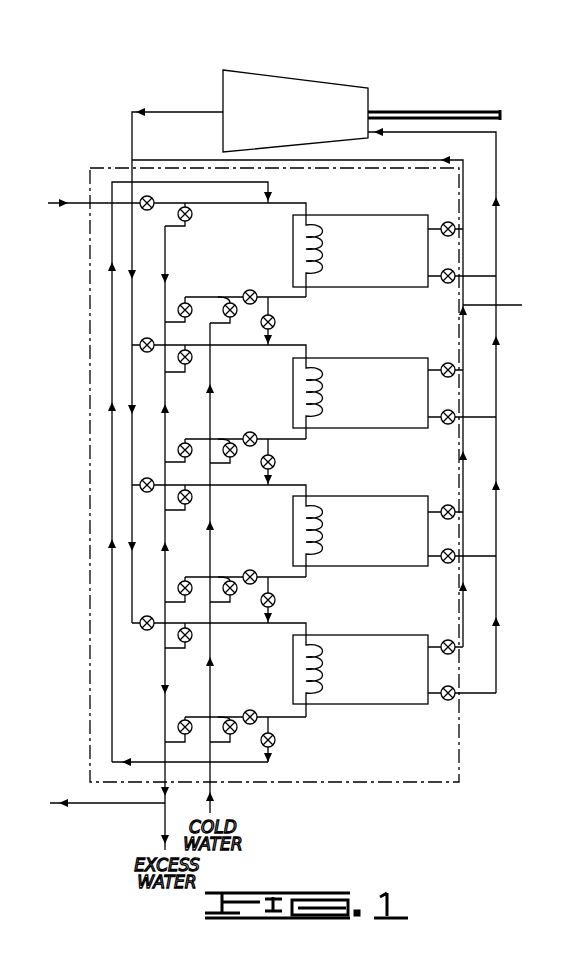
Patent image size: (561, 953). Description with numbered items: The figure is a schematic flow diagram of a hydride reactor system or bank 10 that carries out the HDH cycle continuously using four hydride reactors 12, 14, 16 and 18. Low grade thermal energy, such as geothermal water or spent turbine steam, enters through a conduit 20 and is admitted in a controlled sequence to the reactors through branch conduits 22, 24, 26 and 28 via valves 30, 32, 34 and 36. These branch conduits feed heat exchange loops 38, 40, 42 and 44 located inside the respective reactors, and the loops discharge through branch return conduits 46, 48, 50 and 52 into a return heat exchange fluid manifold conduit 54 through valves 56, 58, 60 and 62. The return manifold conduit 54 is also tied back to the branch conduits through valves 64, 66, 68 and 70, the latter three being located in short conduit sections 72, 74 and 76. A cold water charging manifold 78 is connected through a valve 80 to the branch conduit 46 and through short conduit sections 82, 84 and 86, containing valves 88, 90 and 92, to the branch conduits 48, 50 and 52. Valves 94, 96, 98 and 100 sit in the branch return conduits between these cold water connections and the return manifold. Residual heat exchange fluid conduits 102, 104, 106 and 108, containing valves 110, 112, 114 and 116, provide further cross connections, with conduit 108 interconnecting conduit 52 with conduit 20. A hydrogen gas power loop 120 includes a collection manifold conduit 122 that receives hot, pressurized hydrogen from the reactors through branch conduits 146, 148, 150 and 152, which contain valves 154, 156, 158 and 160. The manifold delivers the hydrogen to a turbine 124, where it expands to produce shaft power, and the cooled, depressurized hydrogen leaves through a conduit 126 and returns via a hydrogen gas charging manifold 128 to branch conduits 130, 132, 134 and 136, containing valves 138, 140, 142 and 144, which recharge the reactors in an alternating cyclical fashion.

The hydride reactor system 10 is at (357, 783).
The hydride reactor 12 is at (368, 214).
The hydride reactor 14 is at (366, 357).
The hydride reactor 16 is at (366, 495).
The hydride reactor 18 is at (366, 634).
The conduit 20 is at (78, 200).
The branch conduit 22 is at (136, 198).
The branch conduit 24 is at (146, 338).
The branch conduit 26 is at (146, 478).
The branch conduit 28 is at (146, 616).
The valve 30 is at (152, 198).
The valve 32 is at (148, 353).
The valve 34 is at (148, 493).
The valve 36 is at (148, 631).
The heat exchange loop 38 is at (296, 234).
The heat exchange loop 40 is at (296, 376).
The heat exchange loop 42 is at (296, 518).
The heat exchange loop 44 is at (296, 657).
The branch return conduit 46 is at (302, 299).
The branch return conduit 48 is at (302, 441).
The branch return conduit 50 is at (302, 579).
The branch return conduit 52 is at (302, 719).
The return heat exchange fluid manifold conduit 54 is at (164, 706).
The valve 56 is at (255, 279).
The valve 58 is at (255, 421).
The valve 60 is at (255, 559).
The valve 62 is at (255, 699).
The valve 64 is at (192, 214).
The valve 66 is at (192, 357).
The valve 68 is at (192, 497).
The valve 70 is at (192, 635).
The short conduit section 72 is at (172, 372).
The short conduit section 74 is at (172, 510).
The short conduit section 76 is at (172, 648).
The cold water charging manifold 78 is at (212, 773).
The valve 80 is at (229, 297).
The short conduit section 82 is at (214, 465).
The short conduit section 84 is at (214, 604).
The short conduit section 86 is at (214, 744).
The valve 88 is at (229, 439).
The valve 90 is at (229, 577).
The valve 92 is at (229, 717).
The valve 94 is at (186, 302).
The valve 96 is at (186, 442).
The valve 98 is at (186, 580).
The valve 100 is at (186, 719).
The residual heat exchange fluid conduit 102 is at (278, 345).
The residual heat exchange fluid conduit 104 is at (278, 485).
The residual heat exchange fluid conduit 106 is at (278, 623).
The residual heat exchange fluid conduit 108 is at (270, 762).
The valve 110 is at (261, 324).
The valve 112 is at (275, 462).
The valve 114 is at (275, 600).
The valve 116 is at (275, 740).
The hydrogen gas power loop 120 is at (497, 426).
The collection manifold conduit 122 is at (499, 584).
The turbine 124 is at (298, 74).
The conduit 126 is at (184, 110).
The hydrogen gas charging manifold 128 is at (508, 305).
The branch conduit 130 is at (443, 222).
The branch conduit 132 is at (443, 363).
The branch conduit 134 is at (443, 505).
The branch conduit 136 is at (443, 640).
The valve 138 is at (450, 221).
The valve 140 is at (450, 362).
The valve 142 is at (450, 504).
The valve 144 is at (450, 639).
The branch conduit 146 is at (478, 278).
The branch conduit 148 is at (478, 419).
The branch conduit 150 is at (478, 558).
The branch conduit 152 is at (478, 696).
The valve 154 is at (452, 268).
The valve 156 is at (452, 410).
The valve 158 is at (452, 549).
The valve 160 is at (450, 700).